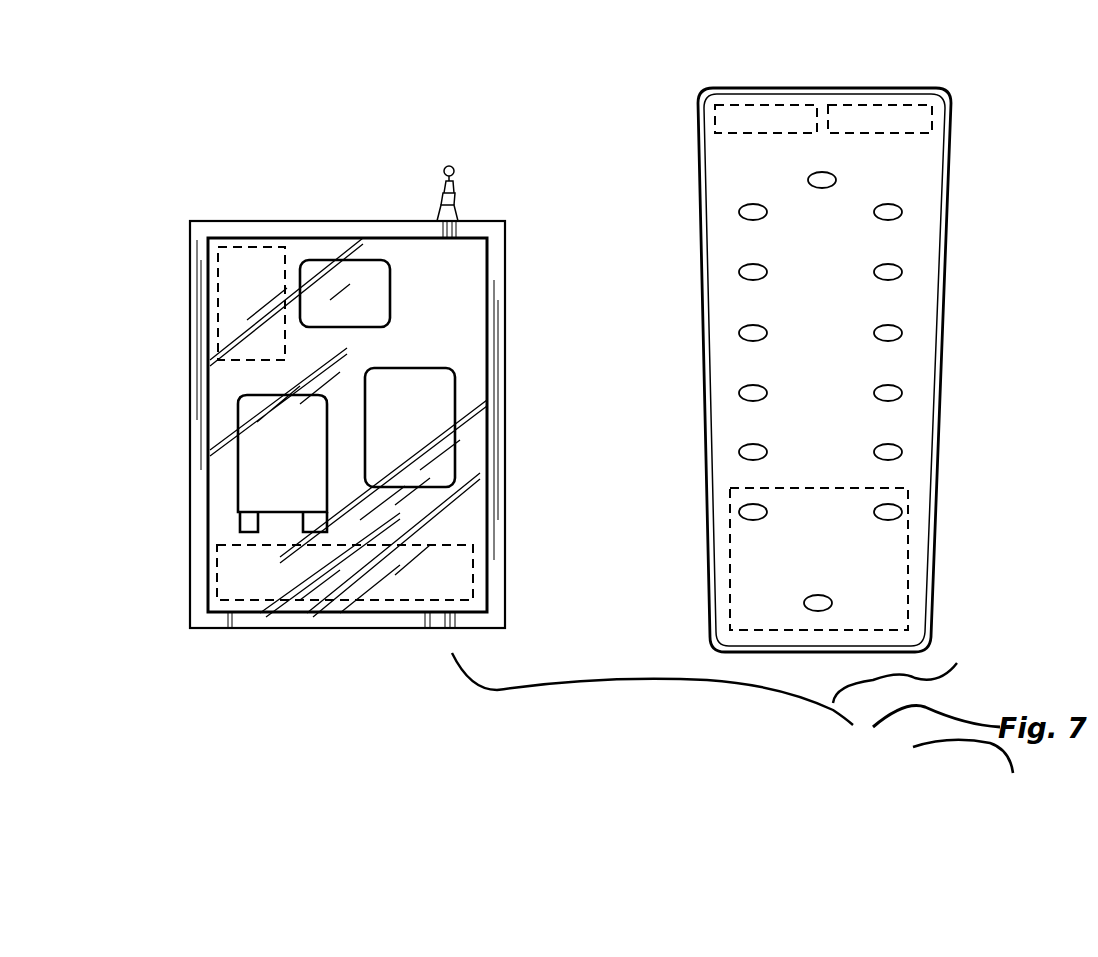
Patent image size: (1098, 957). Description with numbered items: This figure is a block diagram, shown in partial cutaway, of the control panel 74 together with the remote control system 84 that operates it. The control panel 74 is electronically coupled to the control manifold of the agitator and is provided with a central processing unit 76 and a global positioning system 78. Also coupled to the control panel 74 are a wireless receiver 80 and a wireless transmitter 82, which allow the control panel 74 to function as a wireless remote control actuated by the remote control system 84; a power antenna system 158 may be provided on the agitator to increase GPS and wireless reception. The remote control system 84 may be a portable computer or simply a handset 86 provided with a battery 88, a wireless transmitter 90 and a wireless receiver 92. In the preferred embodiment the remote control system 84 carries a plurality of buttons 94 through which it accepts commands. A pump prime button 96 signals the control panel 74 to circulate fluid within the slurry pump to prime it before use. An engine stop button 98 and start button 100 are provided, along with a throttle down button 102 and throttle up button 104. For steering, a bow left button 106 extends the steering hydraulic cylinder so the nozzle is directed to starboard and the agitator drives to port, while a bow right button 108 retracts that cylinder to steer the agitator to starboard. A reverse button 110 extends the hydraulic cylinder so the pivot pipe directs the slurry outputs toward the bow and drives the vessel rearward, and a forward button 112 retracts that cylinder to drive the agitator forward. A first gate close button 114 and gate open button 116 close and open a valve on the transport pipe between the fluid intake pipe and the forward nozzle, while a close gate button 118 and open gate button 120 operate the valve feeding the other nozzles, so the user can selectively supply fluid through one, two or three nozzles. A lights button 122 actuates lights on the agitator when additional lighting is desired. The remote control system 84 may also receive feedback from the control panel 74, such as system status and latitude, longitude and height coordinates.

The control panel 74 is at (196, 214).
The central processing unit 76 is at (238, 546).
The global positioning system 78 is at (440, 381).
The wireless receiver 80 is at (352, 274).
The wireless transmitter 82 is at (263, 248).
The remote control system 84 is at (828, 341).
The handset 86 is at (893, 58).
The battery 88 is at (730, 598).
The wireless transmitter 90 is at (745, 103).
The wireless receiver 92 is at (900, 103).
The buttons 94 is at (716, 185).
The pump prime button 96 is at (809, 180).
The engine stop button 98 is at (740, 212).
The start button 100 is at (900, 213).
The throttle down button 102 is at (741, 270).
The throttle up button 104 is at (898, 272).
The bow left button 106 is at (741, 333).
The bow right button 108 is at (898, 334).
The reverse button 110 is at (741, 392).
The forward button 112 is at (898, 393).
The first gate close button 114 is at (741, 452).
The gate open button 116 is at (898, 452).
The close gate button 118 is at (741, 511).
The open gate button 120 is at (898, 512).
The lights button 122 is at (808, 603).
The power antenna system 158 is at (455, 195).